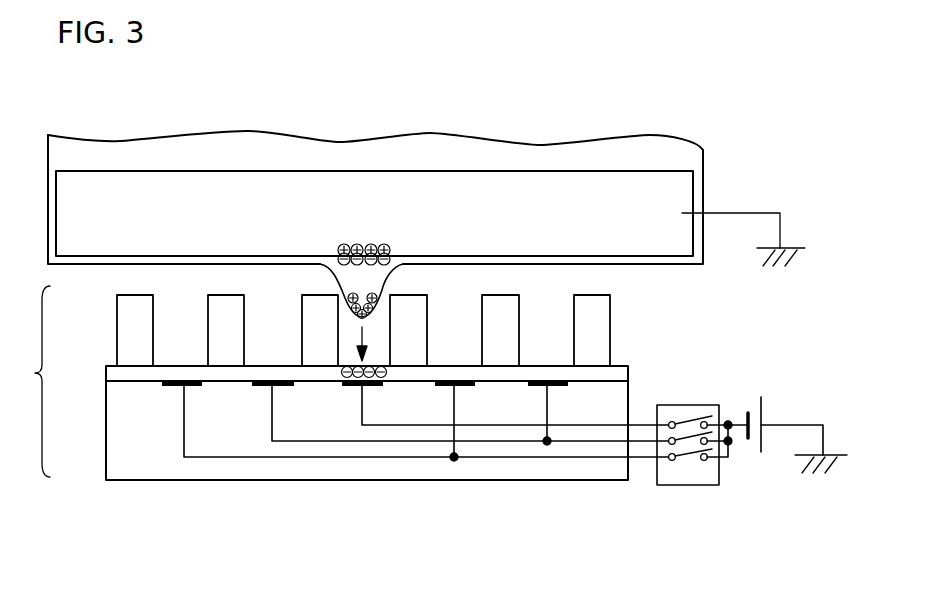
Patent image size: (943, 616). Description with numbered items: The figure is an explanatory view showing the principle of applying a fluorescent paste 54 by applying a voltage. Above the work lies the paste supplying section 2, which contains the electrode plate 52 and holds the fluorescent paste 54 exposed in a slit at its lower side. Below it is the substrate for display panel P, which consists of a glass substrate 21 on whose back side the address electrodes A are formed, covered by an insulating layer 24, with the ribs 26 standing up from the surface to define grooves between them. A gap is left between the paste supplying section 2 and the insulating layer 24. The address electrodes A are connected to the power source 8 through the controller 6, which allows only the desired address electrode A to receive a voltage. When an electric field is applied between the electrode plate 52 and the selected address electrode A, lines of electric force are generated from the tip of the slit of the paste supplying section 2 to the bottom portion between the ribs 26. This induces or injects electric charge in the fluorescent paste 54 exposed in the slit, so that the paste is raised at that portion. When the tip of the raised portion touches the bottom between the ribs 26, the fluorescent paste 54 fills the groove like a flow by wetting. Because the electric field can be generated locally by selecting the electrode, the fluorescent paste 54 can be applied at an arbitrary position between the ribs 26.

The paste supplying section 2 is at (656, 147).
The electrode plate 52 is at (681, 193).
The fluorescent paste 54 is at (375, 287).
The ribs 26 is at (133, 322).
The insulating layer 24 is at (120, 373).
The glass substrate 21 is at (127, 427).
The controller 6 is at (683, 487).
The power source 8 is at (755, 452).
The substrate for display panel P is at (29, 381).
The address electrodes A is at (352, 386).